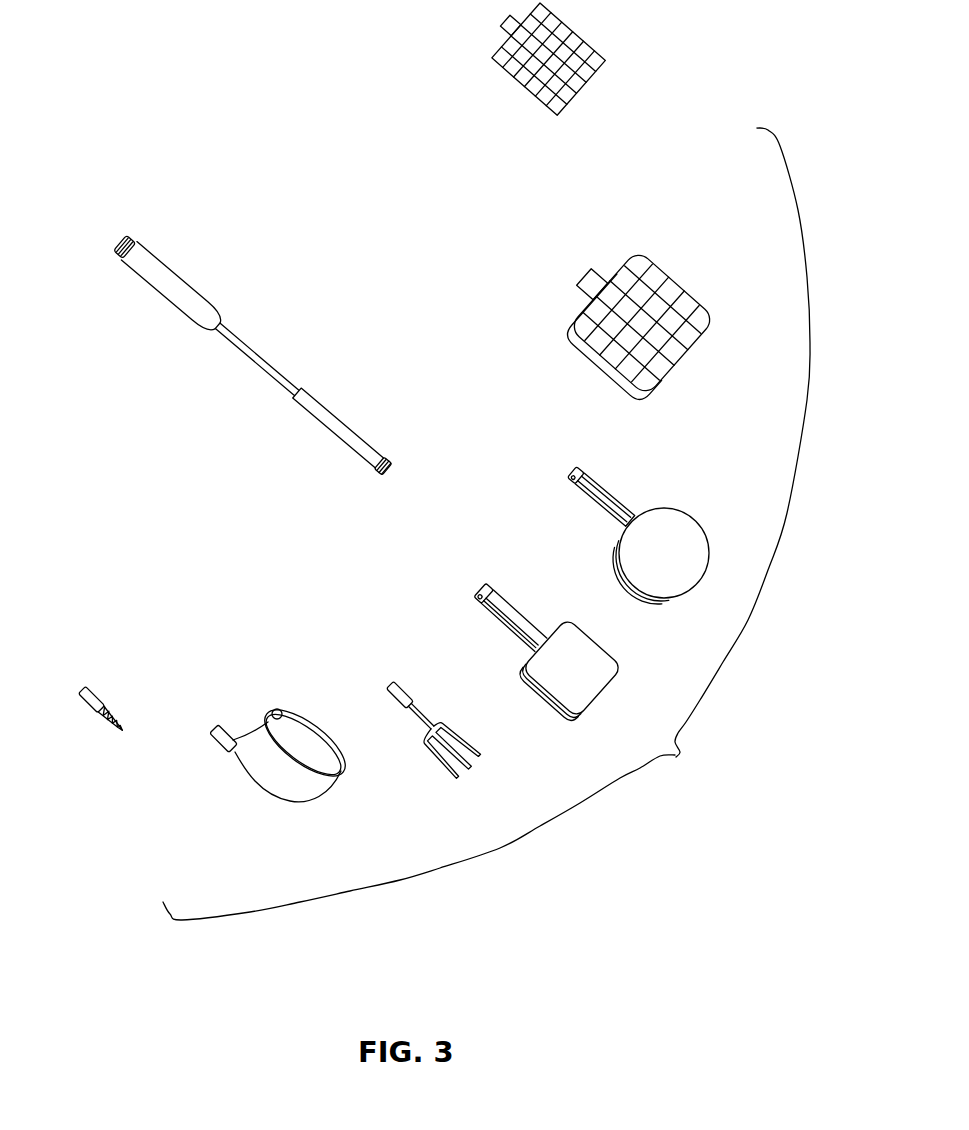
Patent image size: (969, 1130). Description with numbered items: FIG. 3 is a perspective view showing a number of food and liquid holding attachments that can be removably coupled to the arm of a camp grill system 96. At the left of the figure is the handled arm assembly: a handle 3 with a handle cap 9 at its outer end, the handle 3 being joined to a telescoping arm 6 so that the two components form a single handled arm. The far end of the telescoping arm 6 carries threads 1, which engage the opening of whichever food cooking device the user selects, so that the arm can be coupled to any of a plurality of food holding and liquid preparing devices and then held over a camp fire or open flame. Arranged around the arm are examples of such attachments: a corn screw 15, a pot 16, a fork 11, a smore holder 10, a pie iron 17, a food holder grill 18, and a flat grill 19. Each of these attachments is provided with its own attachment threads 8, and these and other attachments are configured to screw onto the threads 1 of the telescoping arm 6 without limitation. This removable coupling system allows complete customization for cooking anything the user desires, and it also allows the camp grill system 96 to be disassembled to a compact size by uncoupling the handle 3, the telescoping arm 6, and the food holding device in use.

The threads 1 is at (381, 461).
The handle 3 is at (177, 283).
The telescoping arm 6 is at (286, 368).
The attachment threads 8 is at (502, 25).
The handle cap 9 is at (122, 232).
The smore holder 10 is at (524, 616).
The fork 11 is at (421, 711).
The corn screw 15 is at (100, 693).
The pot 16 is at (242, 740).
The pie iron 17 is at (655, 513).
The food holder grill 18 is at (657, 267).
The flat grill 19 is at (532, 88).
The camp grill system 96 is at (486, 524).